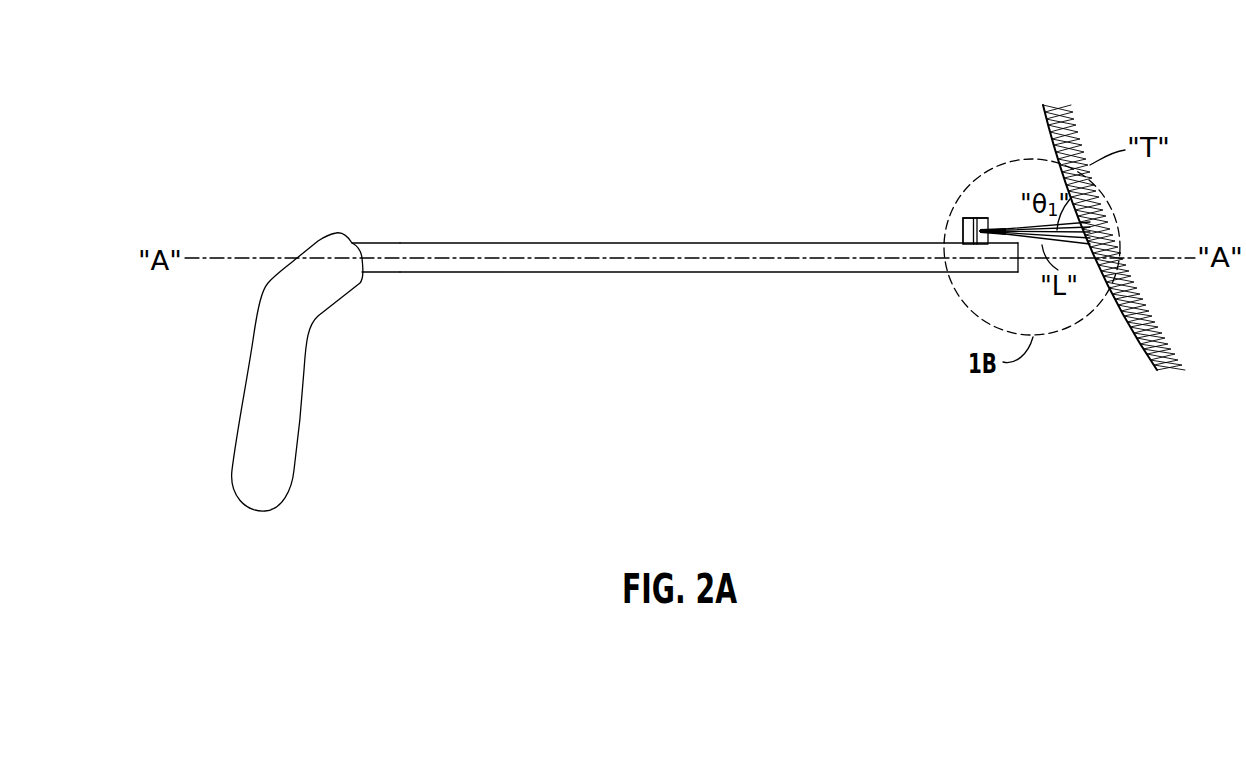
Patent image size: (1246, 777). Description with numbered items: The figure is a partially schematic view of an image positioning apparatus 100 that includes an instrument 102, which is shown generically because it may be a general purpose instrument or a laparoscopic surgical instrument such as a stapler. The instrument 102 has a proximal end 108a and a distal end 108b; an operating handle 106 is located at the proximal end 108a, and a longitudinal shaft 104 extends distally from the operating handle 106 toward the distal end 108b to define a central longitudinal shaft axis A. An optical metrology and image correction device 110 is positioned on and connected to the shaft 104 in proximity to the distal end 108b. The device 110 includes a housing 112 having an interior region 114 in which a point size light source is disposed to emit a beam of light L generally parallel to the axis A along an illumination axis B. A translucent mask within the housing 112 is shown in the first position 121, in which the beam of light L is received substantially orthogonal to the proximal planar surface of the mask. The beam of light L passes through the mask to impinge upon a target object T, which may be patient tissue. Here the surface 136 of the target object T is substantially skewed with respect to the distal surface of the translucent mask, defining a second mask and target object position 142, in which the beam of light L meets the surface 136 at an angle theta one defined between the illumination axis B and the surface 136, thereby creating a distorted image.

The image positioning apparatus 100 is at (562, 93).
The instrument 102 is at (295, 222).
The longitudinal shaft 104 is at (608, 273).
The operating handle 106 is at (242, 397).
The proximal end 108a is at (265, 250).
The distal end 108b is at (1002, 285).
The optical metrology and image correction device 110 is at (975, 207).
The housing 112 is at (964, 219).
The interior region 114 is at (963, 233).
The first position 121 is at (975, 219).
The surface of the target object 136 is at (1053, 122).
The second mask and target object position 142 is at (1007, 142).